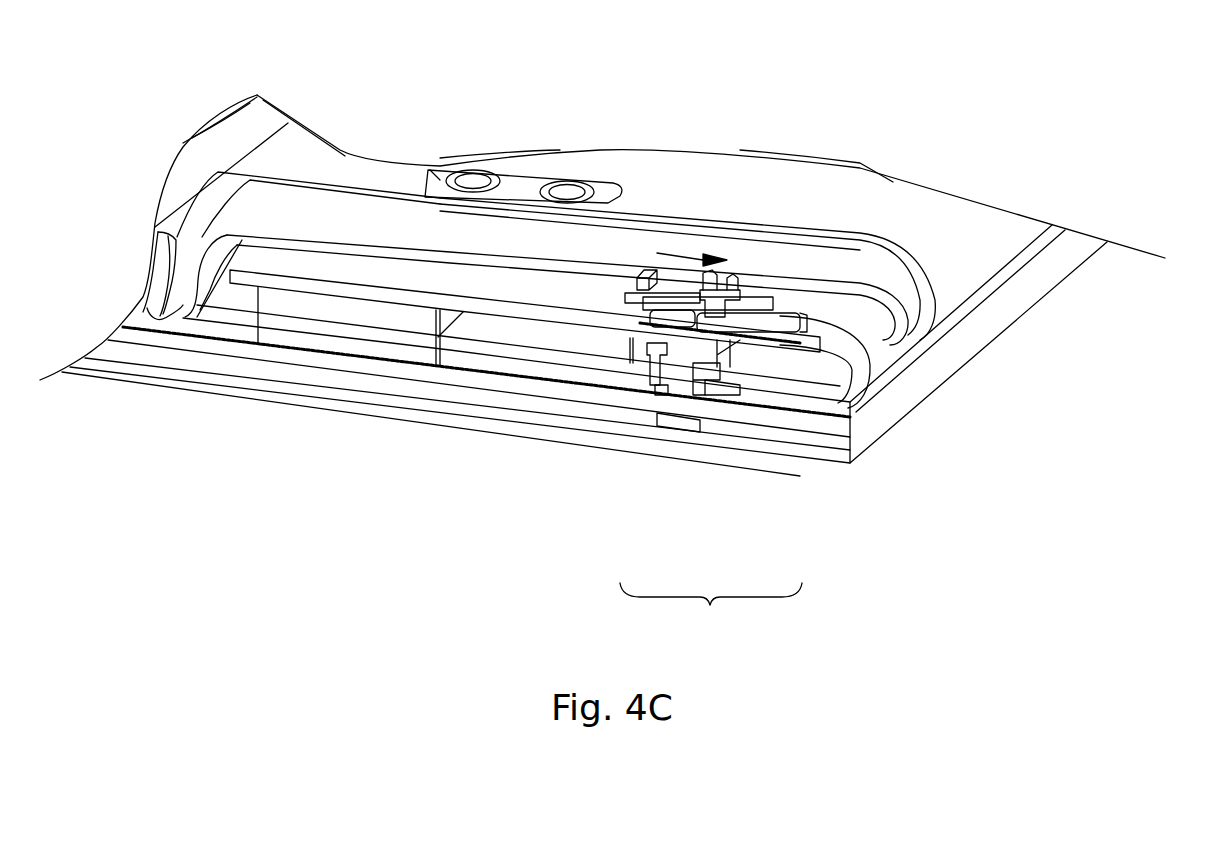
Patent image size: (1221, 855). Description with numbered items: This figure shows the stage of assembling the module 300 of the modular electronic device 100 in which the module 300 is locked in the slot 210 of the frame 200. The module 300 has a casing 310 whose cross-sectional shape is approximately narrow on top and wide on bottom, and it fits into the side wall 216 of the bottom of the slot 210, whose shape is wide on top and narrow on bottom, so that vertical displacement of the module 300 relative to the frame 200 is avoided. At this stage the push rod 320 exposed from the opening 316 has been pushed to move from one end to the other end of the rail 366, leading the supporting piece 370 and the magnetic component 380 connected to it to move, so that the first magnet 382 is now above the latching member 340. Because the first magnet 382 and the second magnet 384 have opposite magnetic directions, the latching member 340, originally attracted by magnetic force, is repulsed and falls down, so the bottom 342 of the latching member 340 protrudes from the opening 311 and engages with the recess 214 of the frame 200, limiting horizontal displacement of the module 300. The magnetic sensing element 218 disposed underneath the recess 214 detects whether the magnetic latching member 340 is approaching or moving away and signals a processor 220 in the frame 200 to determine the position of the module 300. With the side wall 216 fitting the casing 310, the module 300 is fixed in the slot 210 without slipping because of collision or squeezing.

The electronic device 100 is at (193, 87).
The frame 200 is at (1000, 317).
The slot 210 is at (160, 312).
The recess 214 is at (657, 395).
The side wall 216 is at (153, 267).
The magnetic sensing element 218 is at (667, 423).
The processor 220 is at (443, 373).
The module 300 is at (883, 358).
The casing 310 is at (190, 297).
The opening 311 is at (693, 387).
The opening 316 is at (637, 270).
The push rod 320 is at (737, 270).
The latching member 340 is at (650, 362).
The bottom of the latching member 342 is at (680, 383).
The rail 366 is at (667, 287).
The supporting piece 370 is at (785, 330).
The magnetic component 380 is at (711, 609).
The first magnet 382 is at (676, 327).
The second magnet 384 is at (767, 332).